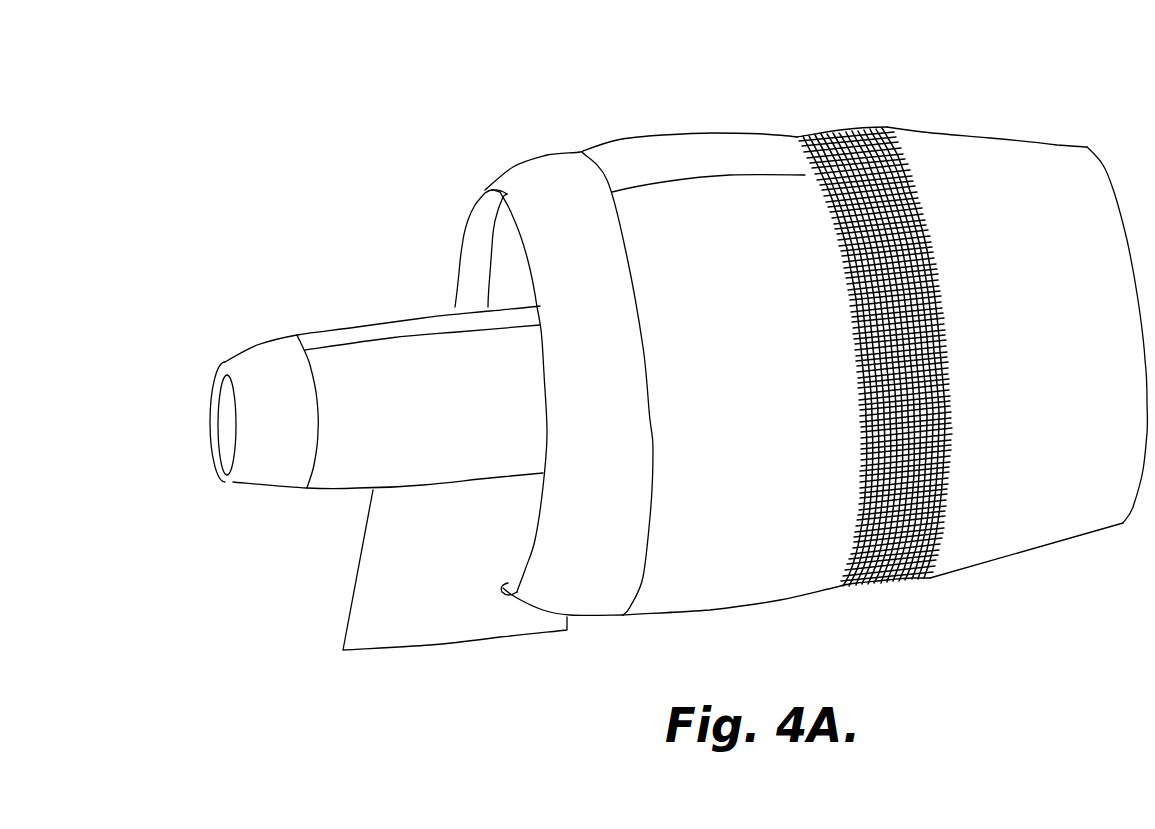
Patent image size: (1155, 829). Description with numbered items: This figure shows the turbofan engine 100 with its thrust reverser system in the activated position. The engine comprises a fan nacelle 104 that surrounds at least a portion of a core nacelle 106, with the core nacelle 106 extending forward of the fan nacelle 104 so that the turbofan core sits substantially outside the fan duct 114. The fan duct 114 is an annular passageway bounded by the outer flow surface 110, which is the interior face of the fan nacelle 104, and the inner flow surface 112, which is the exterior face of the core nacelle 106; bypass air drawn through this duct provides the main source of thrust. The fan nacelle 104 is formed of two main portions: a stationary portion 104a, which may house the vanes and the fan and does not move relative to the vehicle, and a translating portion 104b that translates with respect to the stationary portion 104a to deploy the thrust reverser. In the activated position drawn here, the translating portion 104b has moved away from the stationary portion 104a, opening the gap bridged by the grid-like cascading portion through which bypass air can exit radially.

The turbofan engine 100 is at (292, 149).
The fan nacelle 104 is at (713, 188).
The stationary portion 104a is at (607, 152).
The translating portion 104b is at (1020, 153).
The core nacelle 106 is at (357, 455).
The outer flow surface 110 is at (484, 211).
The inner flow surface 112 is at (345, 352).
The fan duct 114 is at (500, 282).